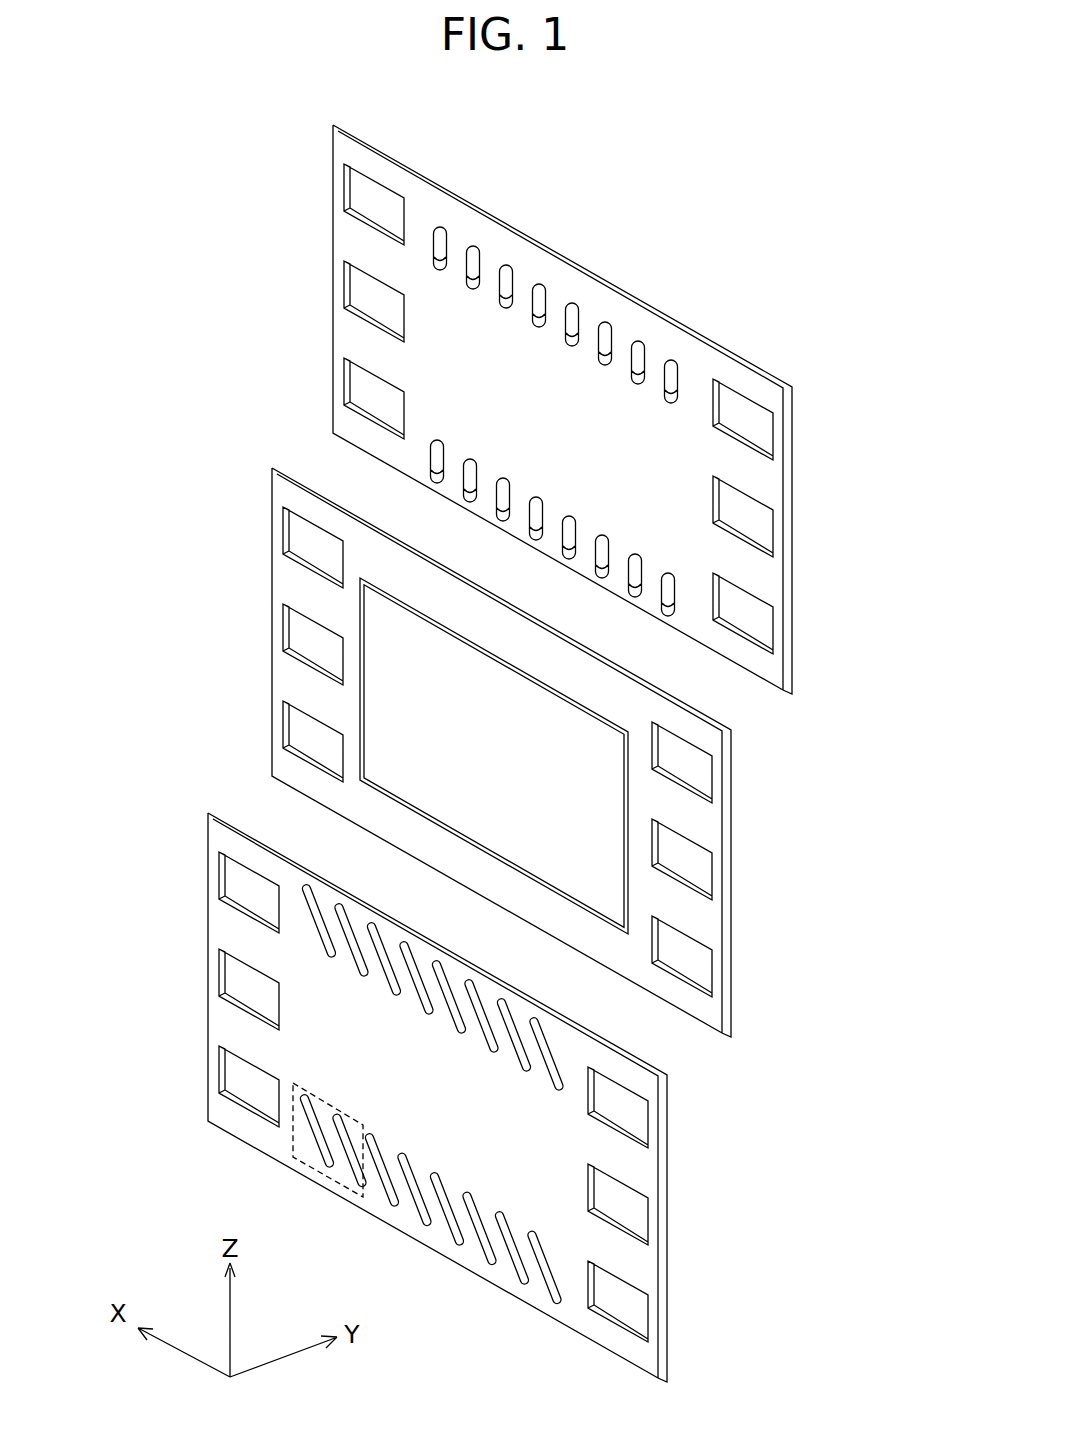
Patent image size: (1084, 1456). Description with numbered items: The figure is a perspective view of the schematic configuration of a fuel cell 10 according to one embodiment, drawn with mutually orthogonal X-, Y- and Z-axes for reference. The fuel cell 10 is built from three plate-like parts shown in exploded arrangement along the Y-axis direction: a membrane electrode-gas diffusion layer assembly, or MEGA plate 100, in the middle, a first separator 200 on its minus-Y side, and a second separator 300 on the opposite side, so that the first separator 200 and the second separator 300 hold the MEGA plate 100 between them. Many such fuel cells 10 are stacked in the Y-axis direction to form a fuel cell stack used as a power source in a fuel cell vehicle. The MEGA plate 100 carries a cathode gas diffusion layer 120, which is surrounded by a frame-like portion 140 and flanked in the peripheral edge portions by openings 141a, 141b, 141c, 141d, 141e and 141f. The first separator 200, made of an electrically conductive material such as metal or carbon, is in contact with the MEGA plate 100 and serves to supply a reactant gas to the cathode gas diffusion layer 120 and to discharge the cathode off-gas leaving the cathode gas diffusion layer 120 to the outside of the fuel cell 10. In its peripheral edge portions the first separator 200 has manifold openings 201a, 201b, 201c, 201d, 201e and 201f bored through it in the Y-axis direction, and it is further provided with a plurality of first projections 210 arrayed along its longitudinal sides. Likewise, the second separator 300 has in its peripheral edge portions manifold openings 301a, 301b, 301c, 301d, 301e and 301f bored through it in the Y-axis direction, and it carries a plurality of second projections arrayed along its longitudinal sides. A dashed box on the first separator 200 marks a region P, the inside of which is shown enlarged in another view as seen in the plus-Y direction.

The fuel cell 10 is at (158, 168).
The membrane electrode-gas diffusion layer assembly (MEGA) plate 100 is at (757, 821).
The cathode gas diffusion layer 120 is at (498, 690).
The frame portion 140 is at (403, 597).
The through hole 141a is at (693, 760).
The through hole 141b is at (295, 732).
The through hole 141c is at (703, 977).
The through hole 141d is at (300, 546).
The through hole 141e is at (690, 860).
The through hole 141f is at (297, 645).
The first separator 200 is at (706, 1168).
The manifold opening 201a is at (633, 1097).
The manifold opening 201b is at (237, 1083).
The manifold opening 201c is at (635, 1315).
The manifold opening 201d is at (250, 887).
The manifold opening 201e is at (627, 1197).
The manifold opening 201f is at (233, 978).
The first projections 210 is at (543, 1280).
The second separator 300 is at (827, 409).
The manifold opening 301a is at (760, 417).
The manifold opening 301b is at (362, 385).
The manifold opening 301c is at (765, 633).
The manifold opening 301d is at (363, 203).
The manifold opening 301e is at (753, 513).
The manifold opening 301f is at (363, 298).
The region P is at (318, 1167).